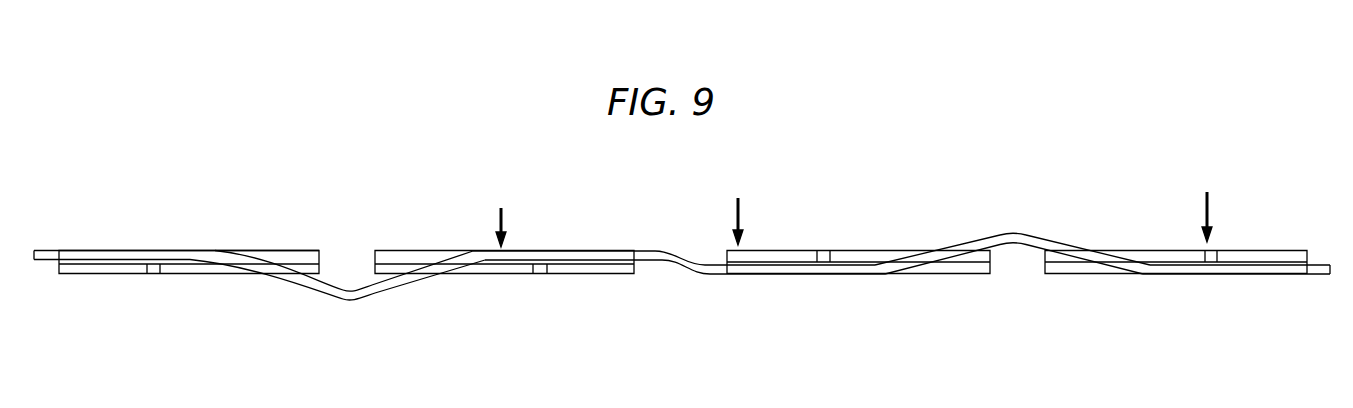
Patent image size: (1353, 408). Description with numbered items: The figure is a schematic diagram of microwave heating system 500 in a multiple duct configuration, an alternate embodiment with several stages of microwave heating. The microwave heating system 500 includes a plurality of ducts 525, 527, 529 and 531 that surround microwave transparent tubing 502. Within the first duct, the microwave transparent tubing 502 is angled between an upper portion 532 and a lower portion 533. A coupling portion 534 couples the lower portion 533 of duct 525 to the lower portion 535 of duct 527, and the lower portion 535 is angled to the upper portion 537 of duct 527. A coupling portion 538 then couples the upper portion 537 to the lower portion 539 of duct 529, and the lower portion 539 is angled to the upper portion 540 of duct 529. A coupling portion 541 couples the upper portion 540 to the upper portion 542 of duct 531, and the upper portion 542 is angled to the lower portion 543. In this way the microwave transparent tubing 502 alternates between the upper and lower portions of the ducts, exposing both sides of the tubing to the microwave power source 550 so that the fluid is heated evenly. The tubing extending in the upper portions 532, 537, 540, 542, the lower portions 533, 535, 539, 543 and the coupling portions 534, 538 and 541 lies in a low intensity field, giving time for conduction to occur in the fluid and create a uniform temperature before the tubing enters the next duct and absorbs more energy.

The microwave heating system 500 is at (118, 97).
The microwave transparent tubing 502 is at (60, 250).
The duct 525 is at (260, 250).
The duct 527 is at (504, 213).
The duct 529 is at (741, 206).
The duct 531 is at (1206, 203).
The upper portion 532 is at (167, 250).
The lower portion 533 is at (312, 284).
The coupling portion 534 is at (345, 289).
The lower portion 535 is at (389, 290).
The upper portion 537 is at (603, 250).
The coupling portion 538 is at (675, 263).
The lower portion 539 is at (803, 275).
The upper portion 540 is at (962, 250).
The coupling portion 541 is at (1020, 237).
The upper portion 542 is at (1087, 252).
The lower portion 543 is at (1243, 270).
The microwave power source 550 is at (155, 265).